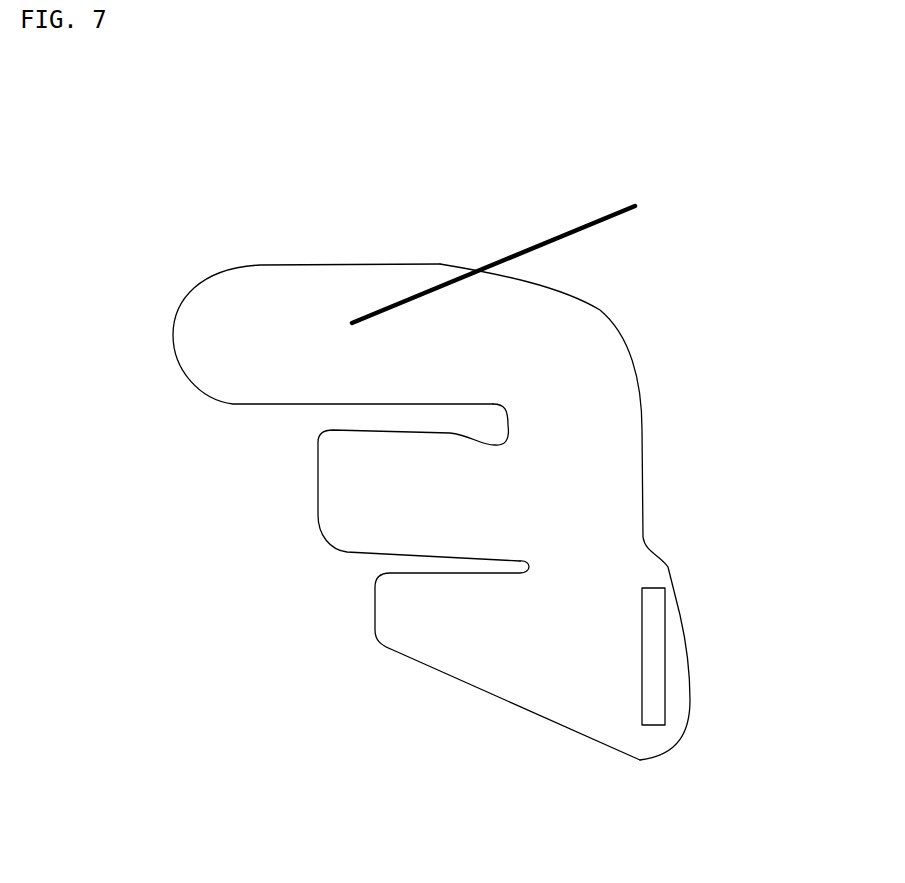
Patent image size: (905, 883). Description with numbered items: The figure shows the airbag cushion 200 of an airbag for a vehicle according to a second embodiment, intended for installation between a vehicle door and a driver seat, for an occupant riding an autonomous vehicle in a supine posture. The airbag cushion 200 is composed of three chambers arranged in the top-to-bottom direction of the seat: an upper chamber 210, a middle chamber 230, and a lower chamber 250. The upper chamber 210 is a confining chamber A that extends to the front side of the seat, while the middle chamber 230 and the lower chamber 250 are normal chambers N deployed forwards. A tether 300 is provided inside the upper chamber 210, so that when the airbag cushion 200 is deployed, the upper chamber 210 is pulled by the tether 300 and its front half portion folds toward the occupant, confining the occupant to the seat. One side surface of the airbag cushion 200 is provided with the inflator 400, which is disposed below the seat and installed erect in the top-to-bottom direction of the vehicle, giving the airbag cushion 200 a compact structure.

The airbag cushion 200 is at (362, 247).
The upper chamber 210 is at (203, 337).
The middle chamber 230 is at (345, 512).
The lower chamber 250 is at (402, 615).
The tether 300 is at (550, 245).
The inflator 400 is at (653, 658).